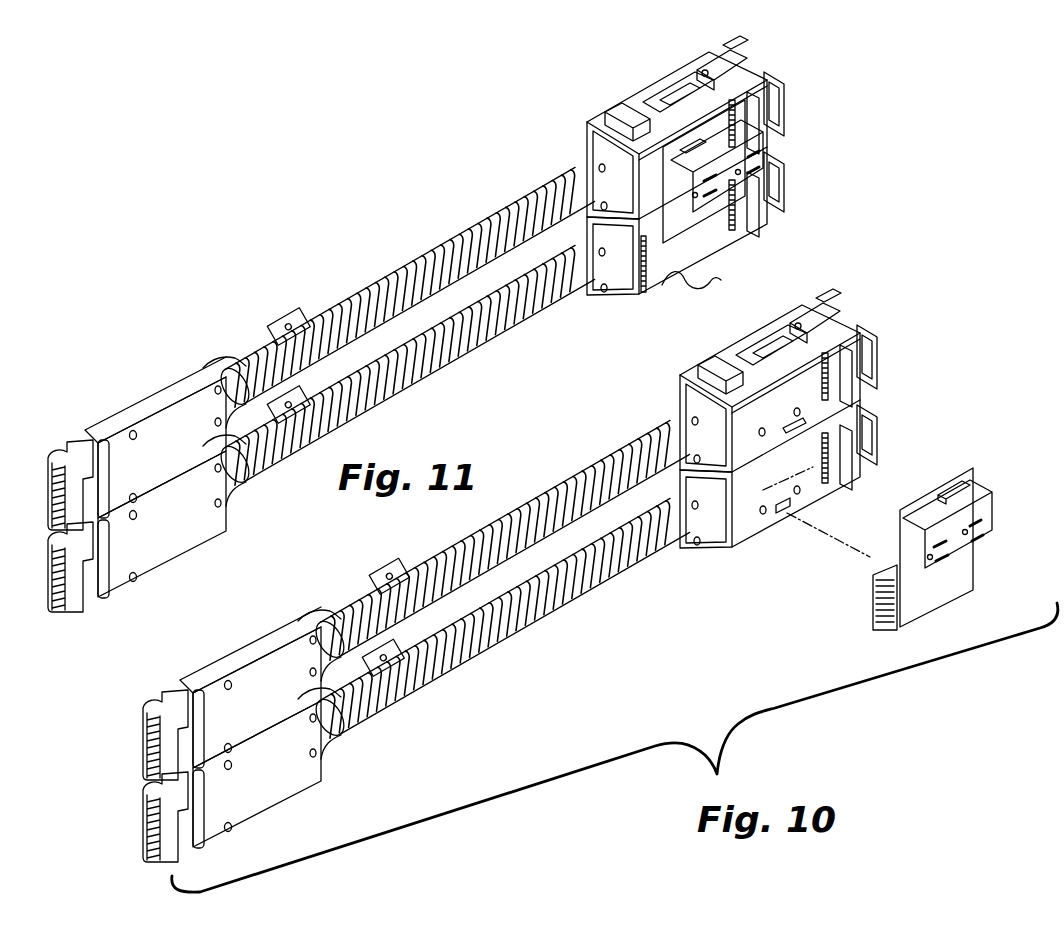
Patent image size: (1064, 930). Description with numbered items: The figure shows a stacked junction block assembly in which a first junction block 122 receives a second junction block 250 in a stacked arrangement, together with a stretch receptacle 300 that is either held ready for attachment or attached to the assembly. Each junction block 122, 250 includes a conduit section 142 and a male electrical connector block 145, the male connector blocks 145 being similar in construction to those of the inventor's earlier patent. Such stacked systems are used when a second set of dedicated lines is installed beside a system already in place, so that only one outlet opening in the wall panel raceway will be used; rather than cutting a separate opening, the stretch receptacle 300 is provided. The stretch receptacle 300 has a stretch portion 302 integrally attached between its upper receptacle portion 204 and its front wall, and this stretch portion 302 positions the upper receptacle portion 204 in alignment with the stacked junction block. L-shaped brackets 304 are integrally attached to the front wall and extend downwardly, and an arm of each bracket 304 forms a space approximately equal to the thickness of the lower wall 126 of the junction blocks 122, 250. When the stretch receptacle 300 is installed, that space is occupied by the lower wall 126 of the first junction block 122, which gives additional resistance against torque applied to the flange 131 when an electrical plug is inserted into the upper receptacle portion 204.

In FIG. 11, the first junction block 122 is at (627, 304).
In FIG. 10, the first junction block 122 is at (743, 546).
In FIG. 11, the lower wall 126 is at (643, 296).
In FIG. 10, the flange 131 is at (784, 514).
In FIG. 11, the conduit section 142 is at (449, 242).
In FIG. 10, the conduit section 142 is at (538, 500).
In FIG. 11, the male electrical connector block 145 is at (178, 418).
In FIG. 10, the male electrical connector block 145 is at (275, 668).
In FIG. 10, the upper receptacle portion 204 is at (964, 492).
In FIG. 11, the second junction block 250 is at (626, 93).
In FIG. 10, the second junction block 250 is at (788, 315).
In FIG. 11, the stretch receptacle 300 is at (772, 143).
In FIG. 10, the stretch receptacle 300 is at (992, 486).
In FIG. 11, the stretch portion 302 is at (728, 218).
In FIG. 10, the stretch portion 302 is at (958, 562).
In FIG. 11, the L-shaped bracket 304 is at (709, 287).